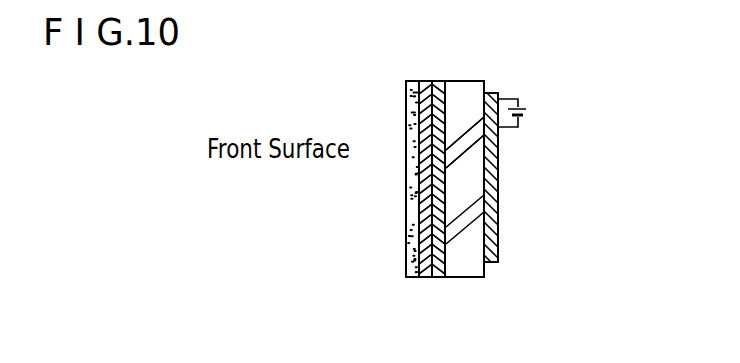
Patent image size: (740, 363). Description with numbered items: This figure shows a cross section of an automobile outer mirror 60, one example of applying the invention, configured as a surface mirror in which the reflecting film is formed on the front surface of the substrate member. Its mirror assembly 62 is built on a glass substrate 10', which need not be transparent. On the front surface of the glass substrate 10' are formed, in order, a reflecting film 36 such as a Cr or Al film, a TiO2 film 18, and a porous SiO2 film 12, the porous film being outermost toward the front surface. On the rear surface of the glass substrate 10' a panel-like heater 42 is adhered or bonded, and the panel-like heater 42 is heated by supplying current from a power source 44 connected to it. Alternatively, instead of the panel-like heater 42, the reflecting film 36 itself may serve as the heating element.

The glass substrate 10' is at (469, 210).
The porous SiO2 film 12 is at (414, 278).
The optical layer 18 is at (428, 278).
The reflecting film 36 is at (435, 278).
The panel-like heater 42 is at (498, 218).
The power source 44 is at (521, 118).
The automobile outer mirror 60 is at (652, 86).
The mirror assembly 62 is at (590, 199).